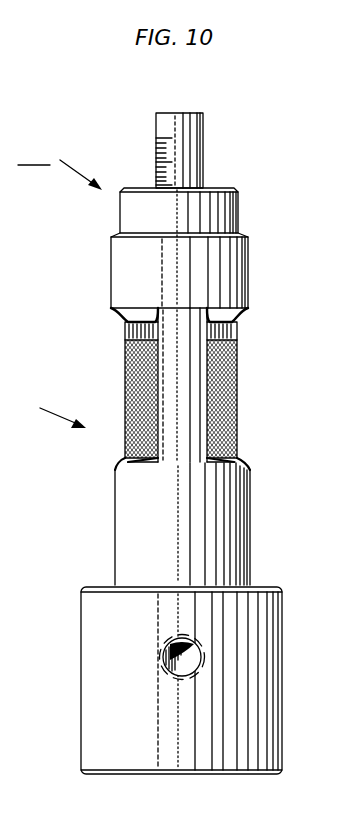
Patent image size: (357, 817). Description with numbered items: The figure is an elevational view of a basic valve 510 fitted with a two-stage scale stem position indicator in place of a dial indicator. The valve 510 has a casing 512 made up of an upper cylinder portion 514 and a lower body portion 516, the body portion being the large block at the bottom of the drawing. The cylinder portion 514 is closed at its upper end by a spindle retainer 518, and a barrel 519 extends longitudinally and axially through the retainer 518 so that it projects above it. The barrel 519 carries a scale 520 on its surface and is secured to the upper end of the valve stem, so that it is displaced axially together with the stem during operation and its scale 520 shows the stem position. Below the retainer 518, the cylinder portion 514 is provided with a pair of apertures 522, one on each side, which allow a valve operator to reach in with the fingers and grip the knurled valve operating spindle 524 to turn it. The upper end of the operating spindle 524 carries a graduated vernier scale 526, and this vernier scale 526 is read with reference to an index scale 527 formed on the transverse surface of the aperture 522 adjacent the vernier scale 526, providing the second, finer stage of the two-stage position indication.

The valve 510 is at (60, 167).
The casing 512 is at (44, 410).
The cylinder portion 514 is at (233, 533).
The body portion 516 is at (93, 613).
The spindle retainer 518 is at (238, 212).
The barrel 519 is at (204, 133).
The scale 520 is at (158, 153).
The apertures 522 is at (238, 319).
The valve operating spindle 524 is at (226, 402).
The graduated vernier scale 526 is at (124, 331).
The index scale 527 is at (243, 303).